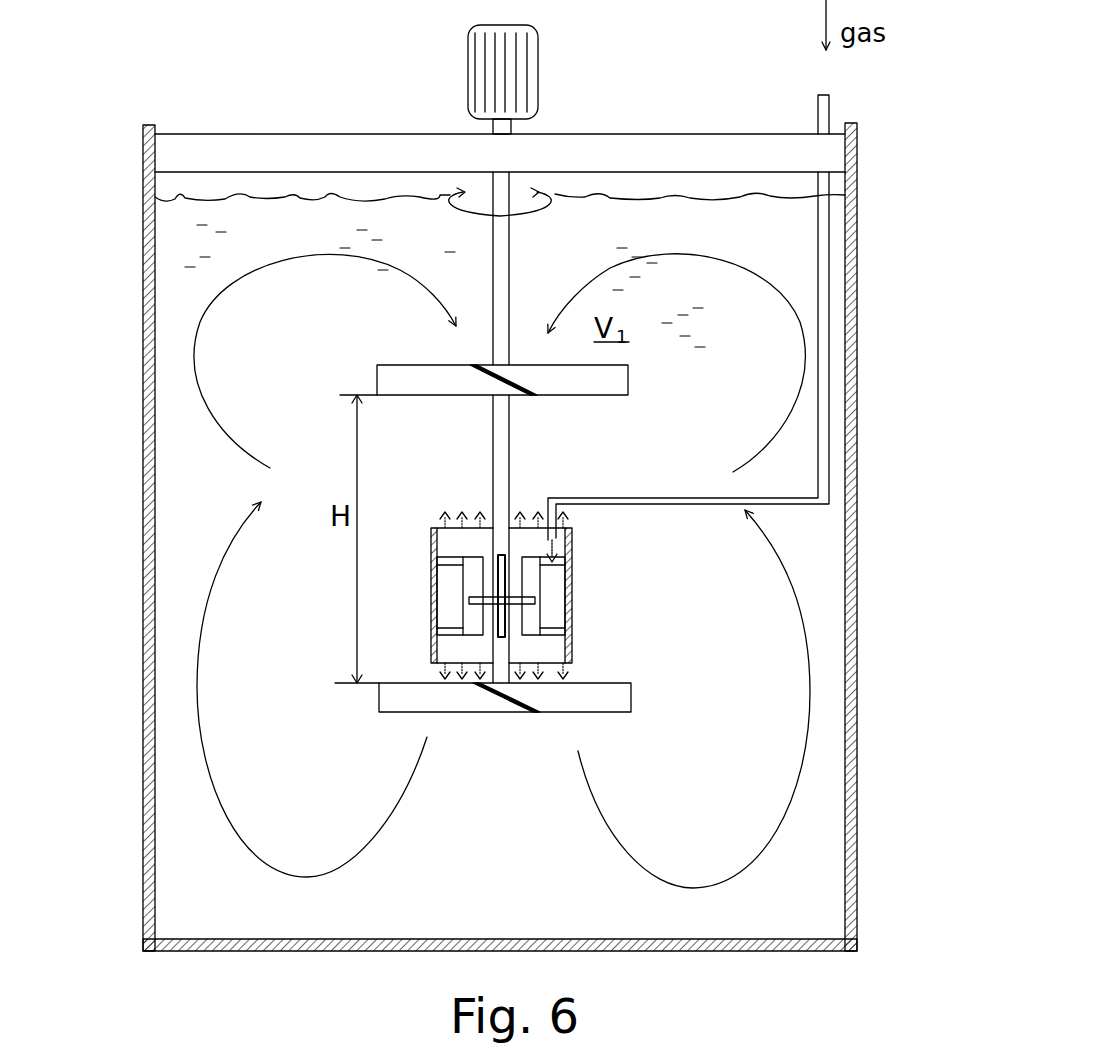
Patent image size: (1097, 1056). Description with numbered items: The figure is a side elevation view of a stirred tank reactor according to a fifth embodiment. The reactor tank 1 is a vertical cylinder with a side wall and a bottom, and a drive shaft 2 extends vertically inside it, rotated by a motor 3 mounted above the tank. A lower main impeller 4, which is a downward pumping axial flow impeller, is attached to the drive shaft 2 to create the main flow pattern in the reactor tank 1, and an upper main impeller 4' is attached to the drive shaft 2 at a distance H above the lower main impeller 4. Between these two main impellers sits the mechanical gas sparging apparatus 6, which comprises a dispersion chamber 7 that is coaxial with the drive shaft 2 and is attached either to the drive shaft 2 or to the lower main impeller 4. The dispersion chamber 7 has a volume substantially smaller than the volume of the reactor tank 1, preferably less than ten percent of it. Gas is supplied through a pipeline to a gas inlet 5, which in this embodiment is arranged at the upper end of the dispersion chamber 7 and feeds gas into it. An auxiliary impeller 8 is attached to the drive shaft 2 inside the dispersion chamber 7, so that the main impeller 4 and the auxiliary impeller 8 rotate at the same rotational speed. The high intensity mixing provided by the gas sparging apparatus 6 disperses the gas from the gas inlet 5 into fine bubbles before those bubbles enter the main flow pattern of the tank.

The reactor tank 1 is at (143, 358).
The drive shaft 2 is at (503, 260).
The motor 3 is at (468, 52).
The main impeller 4 is at (463, 701).
The upper main impeller 4' is at (465, 383).
The gas inlet 5 is at (560, 540).
The gas sparging apparatus 6 is at (487, 595).
The dispersion chamber 7 is at (572, 596).
The auxiliary impeller 8 is at (536, 614).